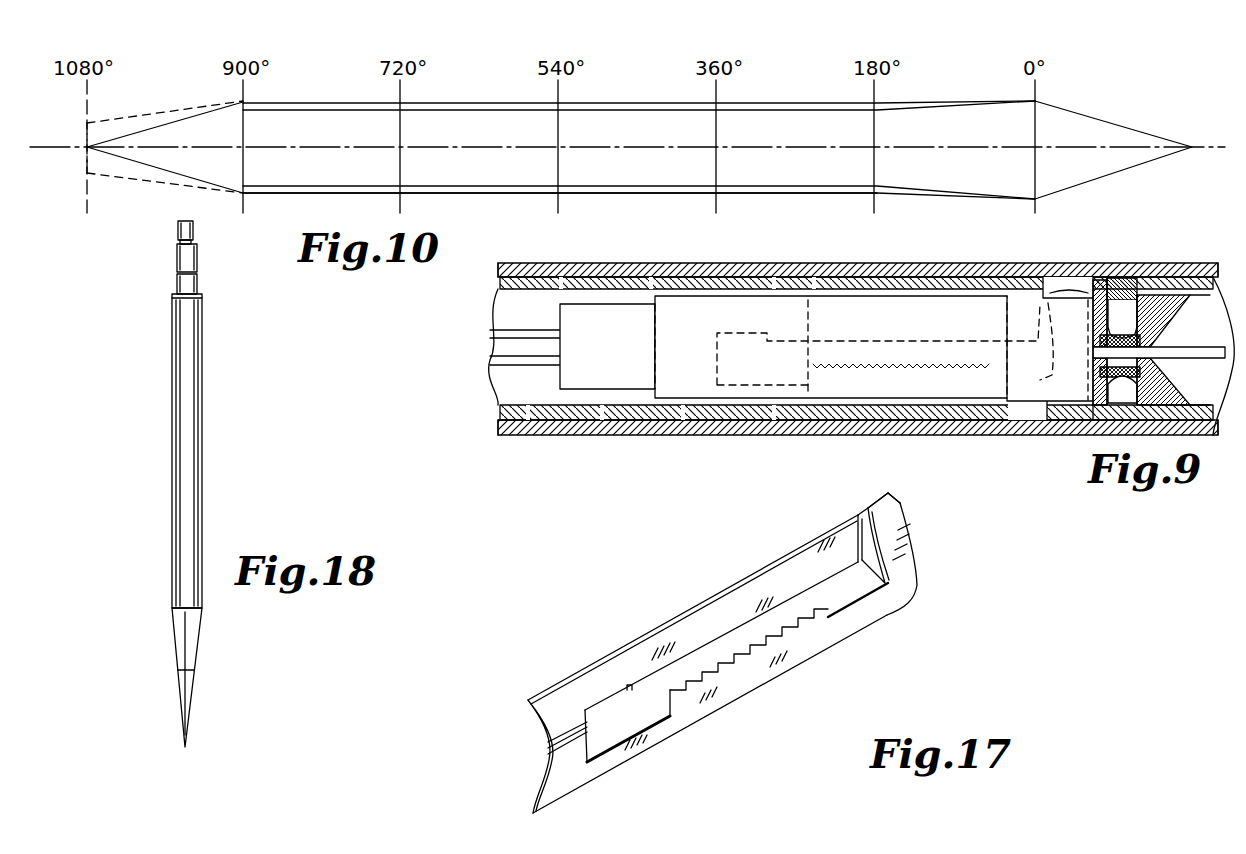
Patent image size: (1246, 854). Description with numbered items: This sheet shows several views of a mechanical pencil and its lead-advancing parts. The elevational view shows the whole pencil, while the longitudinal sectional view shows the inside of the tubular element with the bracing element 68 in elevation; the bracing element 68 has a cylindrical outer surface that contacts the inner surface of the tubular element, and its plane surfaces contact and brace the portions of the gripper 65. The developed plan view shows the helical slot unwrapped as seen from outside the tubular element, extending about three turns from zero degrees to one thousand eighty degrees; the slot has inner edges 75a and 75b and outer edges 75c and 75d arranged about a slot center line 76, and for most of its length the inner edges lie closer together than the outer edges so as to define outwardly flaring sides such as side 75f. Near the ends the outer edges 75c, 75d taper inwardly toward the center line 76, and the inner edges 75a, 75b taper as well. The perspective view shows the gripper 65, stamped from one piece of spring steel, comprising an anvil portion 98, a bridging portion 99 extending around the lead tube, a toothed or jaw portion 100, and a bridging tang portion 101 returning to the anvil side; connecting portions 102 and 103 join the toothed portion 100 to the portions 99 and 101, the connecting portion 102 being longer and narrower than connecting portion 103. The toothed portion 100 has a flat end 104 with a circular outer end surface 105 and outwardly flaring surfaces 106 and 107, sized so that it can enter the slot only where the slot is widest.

In FIG. 10, the slot center line 76 is at (311, 147).
In FIG. 10, the inner edge of slot 75a is at (192, 104).
In FIG. 10, the inner edge of slot 75b is at (155, 193).
In FIG. 10, the outer edge of slot 75c is at (142, 125).
In FIG. 10, the outer edge of slot 75d is at (123, 158).
In FIG. 10, the outwardly flaring side of slot 75f is at (495, 193).
In FIG. 9, the bracing element 68 is at (600, 394).
In FIG. 17, the gripper 65 is at (636, 640).
In FIG. 17, the anvil portion 98 is at (737, 598).
In FIG. 17, the bridging portion 99 is at (548, 750).
In FIG. 17, the toothed or jaw portion 100 is at (748, 680).
In FIG. 17, the bridging tang portion 101 is at (910, 556).
In FIG. 17, the connecting portion 102 is at (660, 738).
In FIG. 17, the connecting portion 103 is at (868, 613).
In FIG. 17, the flat end 104 is at (903, 519).
In FIG. 17, the circular outer end surface 105 is at (880, 493).
In FIG. 17, the outwardly flaring surface 106 is at (870, 508).
In FIG. 17, the outwardly flaring surface 107 is at (898, 497).